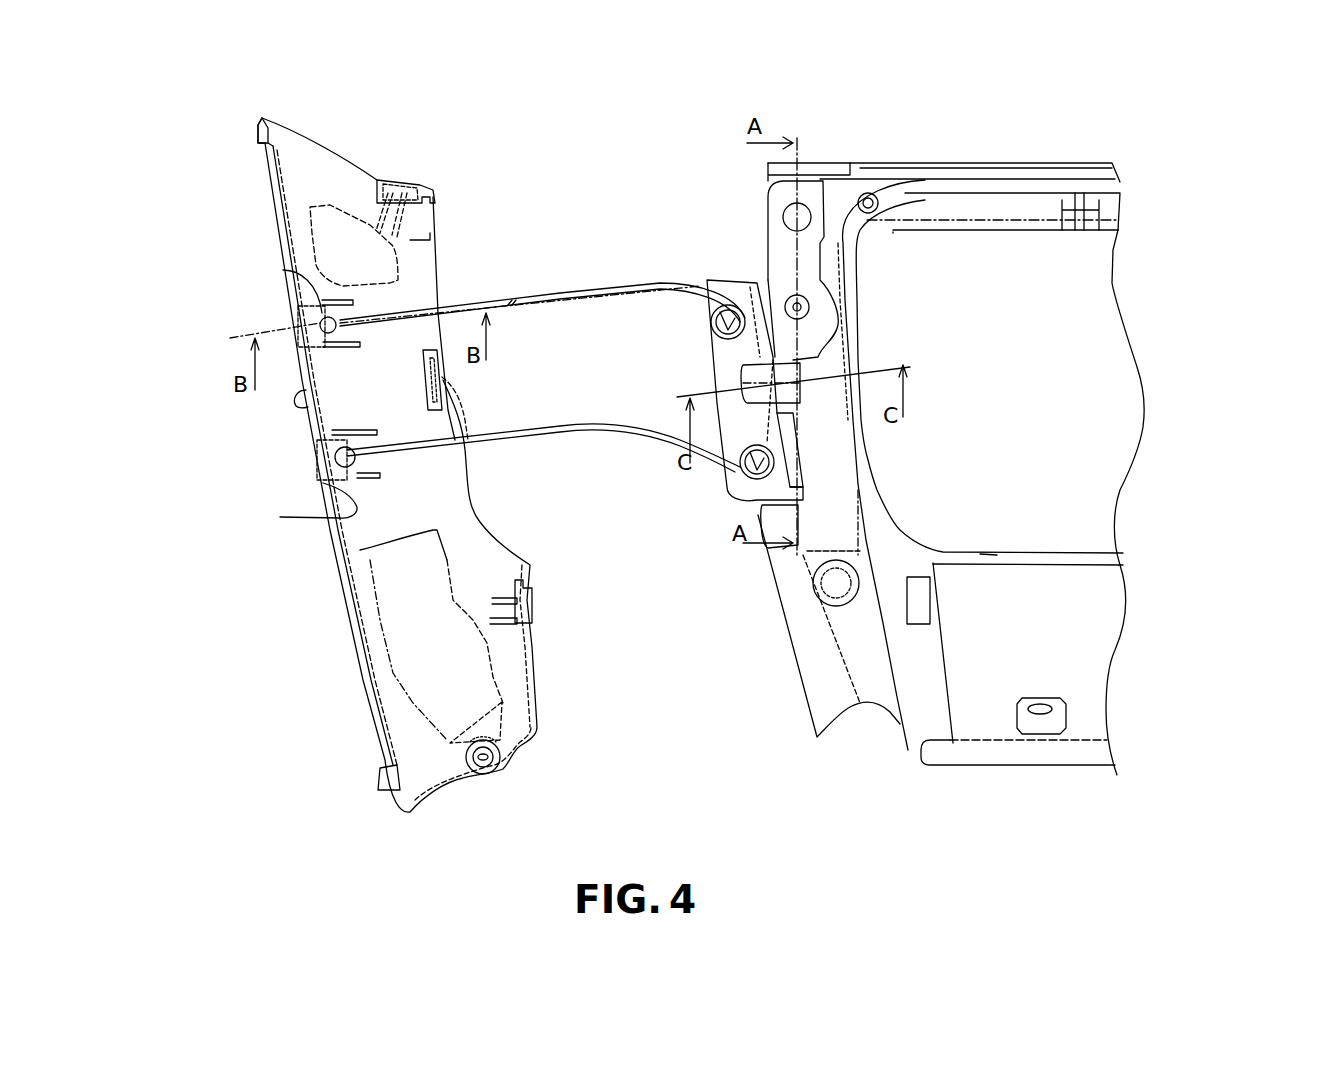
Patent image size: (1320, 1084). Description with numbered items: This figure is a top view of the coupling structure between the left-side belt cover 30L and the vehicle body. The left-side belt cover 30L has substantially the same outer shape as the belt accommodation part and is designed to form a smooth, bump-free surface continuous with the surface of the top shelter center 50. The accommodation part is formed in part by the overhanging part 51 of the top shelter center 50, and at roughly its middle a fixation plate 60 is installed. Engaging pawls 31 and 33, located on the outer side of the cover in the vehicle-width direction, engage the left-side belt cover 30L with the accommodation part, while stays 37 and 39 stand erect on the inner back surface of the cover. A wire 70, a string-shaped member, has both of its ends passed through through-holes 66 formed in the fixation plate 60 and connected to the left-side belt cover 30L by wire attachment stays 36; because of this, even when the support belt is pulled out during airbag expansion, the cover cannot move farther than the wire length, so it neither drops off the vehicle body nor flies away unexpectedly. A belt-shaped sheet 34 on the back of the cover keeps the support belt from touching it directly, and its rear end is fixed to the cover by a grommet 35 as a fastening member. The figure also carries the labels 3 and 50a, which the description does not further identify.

The engagement protrusion 3 is at (296, 405).
The left-side belt cover 30L is at (306, 567).
The engaging pawl 31 is at (262, 140).
The engaging pawl 33 is at (378, 788).
The belt-shaped sheet 34 is at (393, 675).
The grommet 35 is at (474, 775).
The wire attachment stay 36 is at (283, 270).
The stay 37 is at (443, 392).
The stay 39 is at (503, 624).
The top shelter center 50 is at (1025, 775).
The opening of body frame 50a is at (1052, 312).
The overhanging part 51 is at (840, 643).
The fixation plate 60 is at (697, 390).
The through-hole 66 is at (717, 315).
The wire 70 is at (655, 432).